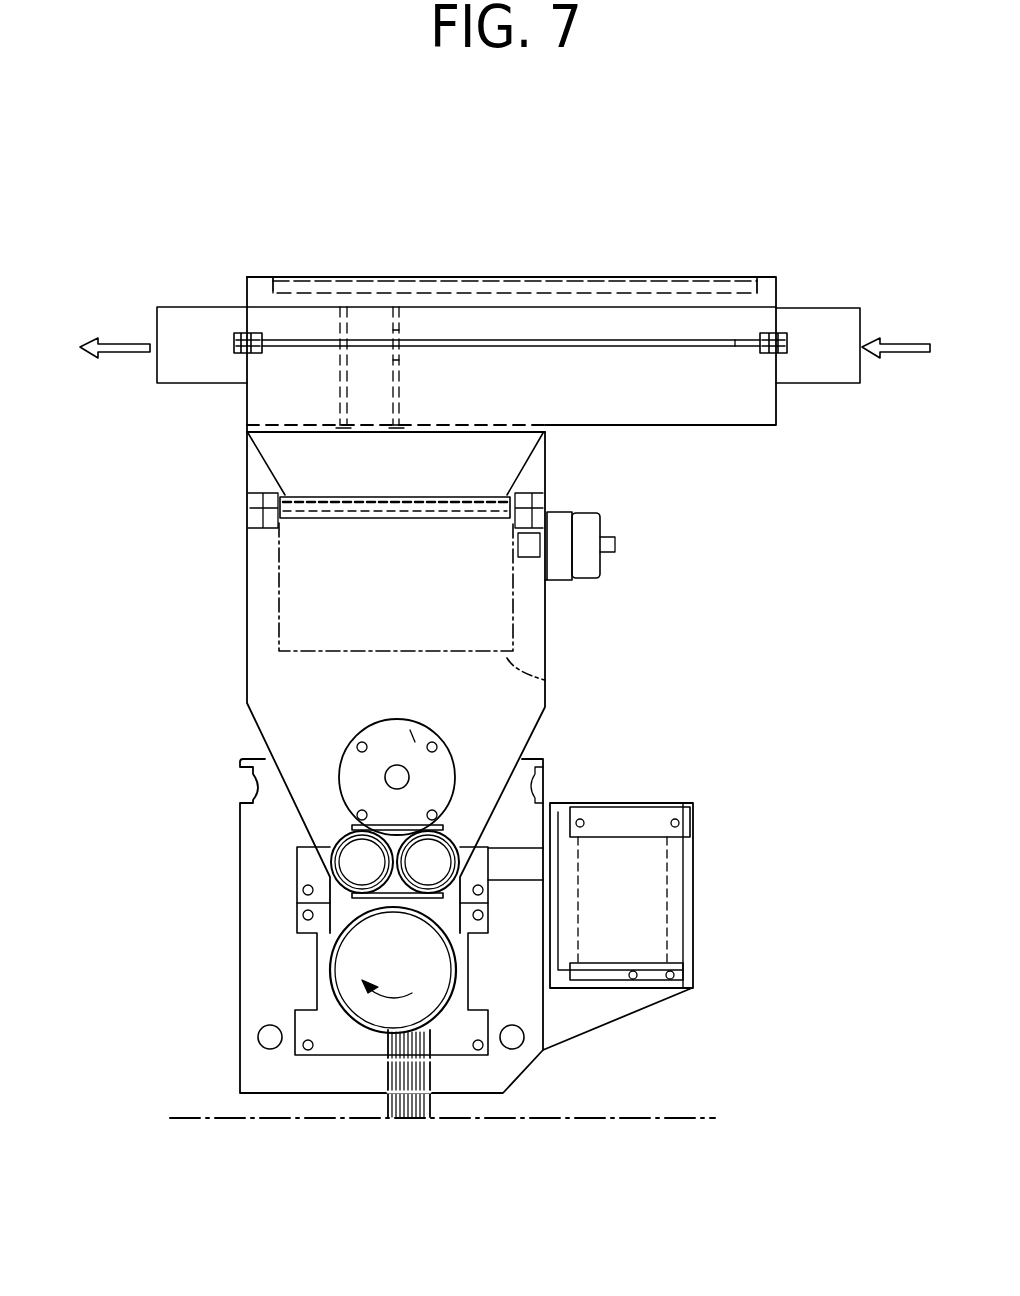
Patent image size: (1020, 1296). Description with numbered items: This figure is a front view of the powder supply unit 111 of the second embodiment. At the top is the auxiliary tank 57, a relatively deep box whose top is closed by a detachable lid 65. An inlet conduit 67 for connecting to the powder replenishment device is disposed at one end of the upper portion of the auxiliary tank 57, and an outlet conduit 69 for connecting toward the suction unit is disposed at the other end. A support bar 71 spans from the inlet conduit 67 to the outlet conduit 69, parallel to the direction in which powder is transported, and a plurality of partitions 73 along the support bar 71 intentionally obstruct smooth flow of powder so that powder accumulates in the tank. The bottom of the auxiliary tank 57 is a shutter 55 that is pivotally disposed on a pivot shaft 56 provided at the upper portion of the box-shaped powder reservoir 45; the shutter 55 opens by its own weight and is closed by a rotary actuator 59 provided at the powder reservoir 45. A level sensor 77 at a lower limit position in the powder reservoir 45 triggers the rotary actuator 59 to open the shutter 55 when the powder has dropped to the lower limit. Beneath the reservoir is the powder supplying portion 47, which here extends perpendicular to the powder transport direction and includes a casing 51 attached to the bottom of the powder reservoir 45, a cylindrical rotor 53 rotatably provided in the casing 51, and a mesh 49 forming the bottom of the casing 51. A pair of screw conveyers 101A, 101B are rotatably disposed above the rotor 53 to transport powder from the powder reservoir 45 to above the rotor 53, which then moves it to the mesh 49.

The powder reservoir 45 is at (263, 640).
The powder supplying portion 47 is at (328, 985).
The mesh 49 is at (443, 1008).
The casing 51 is at (463, 950).
The cylindrical rotor 53 is at (330, 948).
The shutter 55 is at (540, 682).
The pivot shaft 56 is at (343, 512).
The auxiliary tank 57 is at (680, 405).
The rotary actuator 59 is at (592, 568).
The lid 65 is at (600, 276).
The inlet conduit 67 is at (830, 310).
The outlet conduit 69 is at (190, 340).
The support bar 71 is at (558, 349).
The partitions 73 is at (398, 402).
The level sensor 77 is at (420, 736).
The screw conveyer 101A is at (460, 833).
The screw conveyer 101B is at (330, 848).
The powder supply unit 111 is at (200, 483).